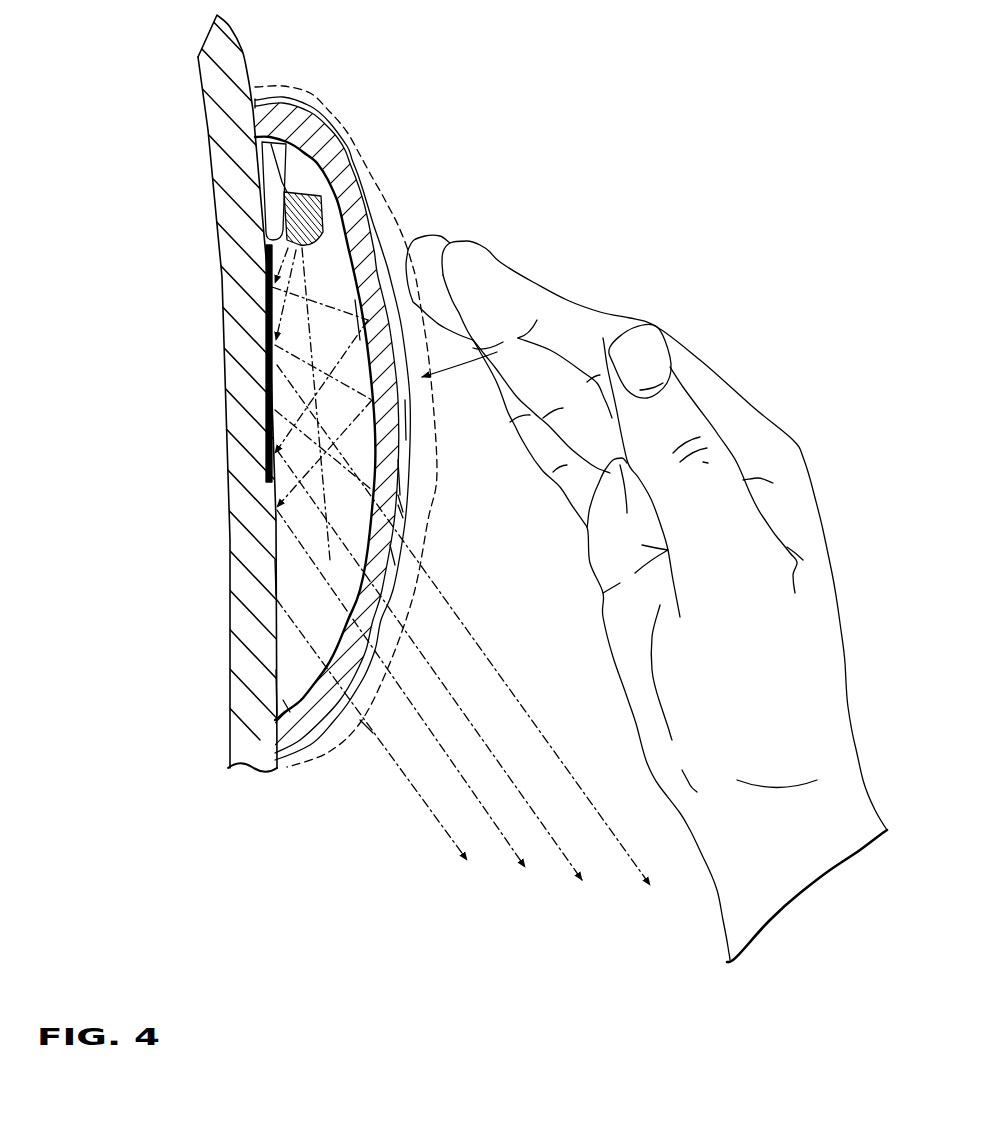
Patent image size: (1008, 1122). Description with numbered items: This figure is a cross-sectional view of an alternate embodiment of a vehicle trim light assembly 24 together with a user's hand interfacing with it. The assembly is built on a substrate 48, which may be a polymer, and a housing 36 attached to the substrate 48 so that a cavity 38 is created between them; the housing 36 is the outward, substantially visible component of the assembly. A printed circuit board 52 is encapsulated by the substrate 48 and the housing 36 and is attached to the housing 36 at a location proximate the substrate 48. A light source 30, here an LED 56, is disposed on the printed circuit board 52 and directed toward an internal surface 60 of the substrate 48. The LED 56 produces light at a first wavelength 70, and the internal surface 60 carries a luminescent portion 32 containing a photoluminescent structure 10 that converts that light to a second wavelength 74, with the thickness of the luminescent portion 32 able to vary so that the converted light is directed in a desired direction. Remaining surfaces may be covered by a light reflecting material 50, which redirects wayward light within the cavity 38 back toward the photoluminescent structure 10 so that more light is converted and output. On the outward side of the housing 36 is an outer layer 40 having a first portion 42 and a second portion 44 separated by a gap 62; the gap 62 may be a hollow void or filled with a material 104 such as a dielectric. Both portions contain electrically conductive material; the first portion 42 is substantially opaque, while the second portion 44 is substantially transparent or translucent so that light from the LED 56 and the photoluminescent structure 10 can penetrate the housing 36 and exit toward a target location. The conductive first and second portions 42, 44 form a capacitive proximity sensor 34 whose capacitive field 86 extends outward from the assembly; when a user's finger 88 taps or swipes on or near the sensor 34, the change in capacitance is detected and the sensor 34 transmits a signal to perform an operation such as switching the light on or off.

The photoluminescent structure 10 is at (262, 404).
The trim light assembly 24 is at (298, 74).
The light source 30 is at (334, 230).
The luminescent portion 32 is at (271, 341).
The sensor 34 is at (422, 418).
The housing 36 is at (305, 138).
The cavity 38 is at (289, 698).
The outer layer 40 is at (593, 322).
The first portion 42 is at (400, 476).
The second portion 44 is at (393, 557).
The substrate 48 is at (233, 212).
The light reflecting material 50 is at (270, 576).
The printed circuit board 52 is at (350, 137).
The LED 56 is at (373, 192).
The internal surface 60 is at (268, 693).
The gap 62 is at (403, 509).
The first wavelength 70 is at (302, 278).
The second wavelength 74 is at (365, 737).
The capacitive field 86 is at (355, 128).
The finger 88 is at (433, 252).
The material 104 is at (403, 515).